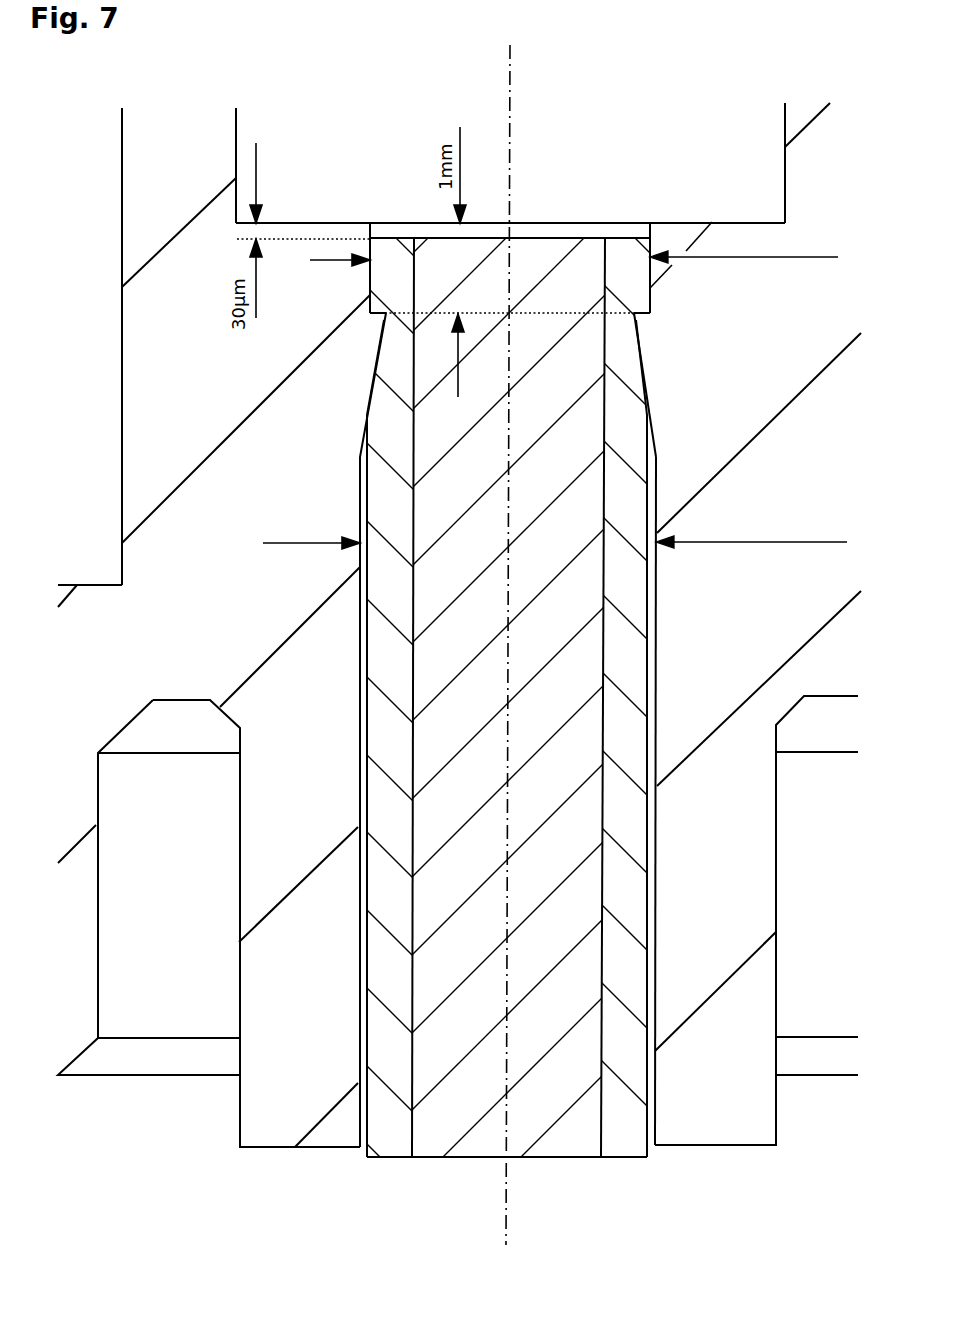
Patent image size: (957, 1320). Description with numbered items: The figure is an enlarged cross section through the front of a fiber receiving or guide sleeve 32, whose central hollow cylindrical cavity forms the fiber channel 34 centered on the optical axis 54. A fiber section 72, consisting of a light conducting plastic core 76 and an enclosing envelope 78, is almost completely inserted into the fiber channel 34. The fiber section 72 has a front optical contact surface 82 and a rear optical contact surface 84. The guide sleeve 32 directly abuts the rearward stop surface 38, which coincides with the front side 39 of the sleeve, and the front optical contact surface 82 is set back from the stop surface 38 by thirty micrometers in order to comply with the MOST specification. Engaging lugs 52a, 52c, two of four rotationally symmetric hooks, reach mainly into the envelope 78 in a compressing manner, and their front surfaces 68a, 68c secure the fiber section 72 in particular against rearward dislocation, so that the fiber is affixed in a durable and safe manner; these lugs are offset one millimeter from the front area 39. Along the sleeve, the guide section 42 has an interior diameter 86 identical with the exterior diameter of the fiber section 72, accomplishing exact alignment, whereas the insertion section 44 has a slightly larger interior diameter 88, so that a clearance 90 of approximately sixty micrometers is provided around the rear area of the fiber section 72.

The guide sleeve 32 is at (777, 864).
The fiber channel 34 is at (462, 660).
The rearward stop surface 38 is at (733, 221).
The front side of the fiber receiving sleeve 39 is at (324, 222).
The guide section 42 is at (652, 284).
The insertion section 44 is at (657, 608).
The engaging lug 52a is at (640, 332).
The engaging lug 52c is at (384, 341).
The optical axis 54 is at (512, 68).
The front surface 68a is at (645, 312).
The front surface 68c is at (379, 310).
The fiber section 72 is at (597, 1158).
The light conducting plastic core 76 is at (458, 1158).
The envelope 78 is at (387, 1158).
The front optical contact surface 82 is at (557, 237).
The rear optical contact surface 84 is at (542, 1158).
The interior diameter of the guide section 86 is at (744, 248).
The interior diameter of the insertion section 88 is at (751, 532).
The clearance 90 is at (653, 818).